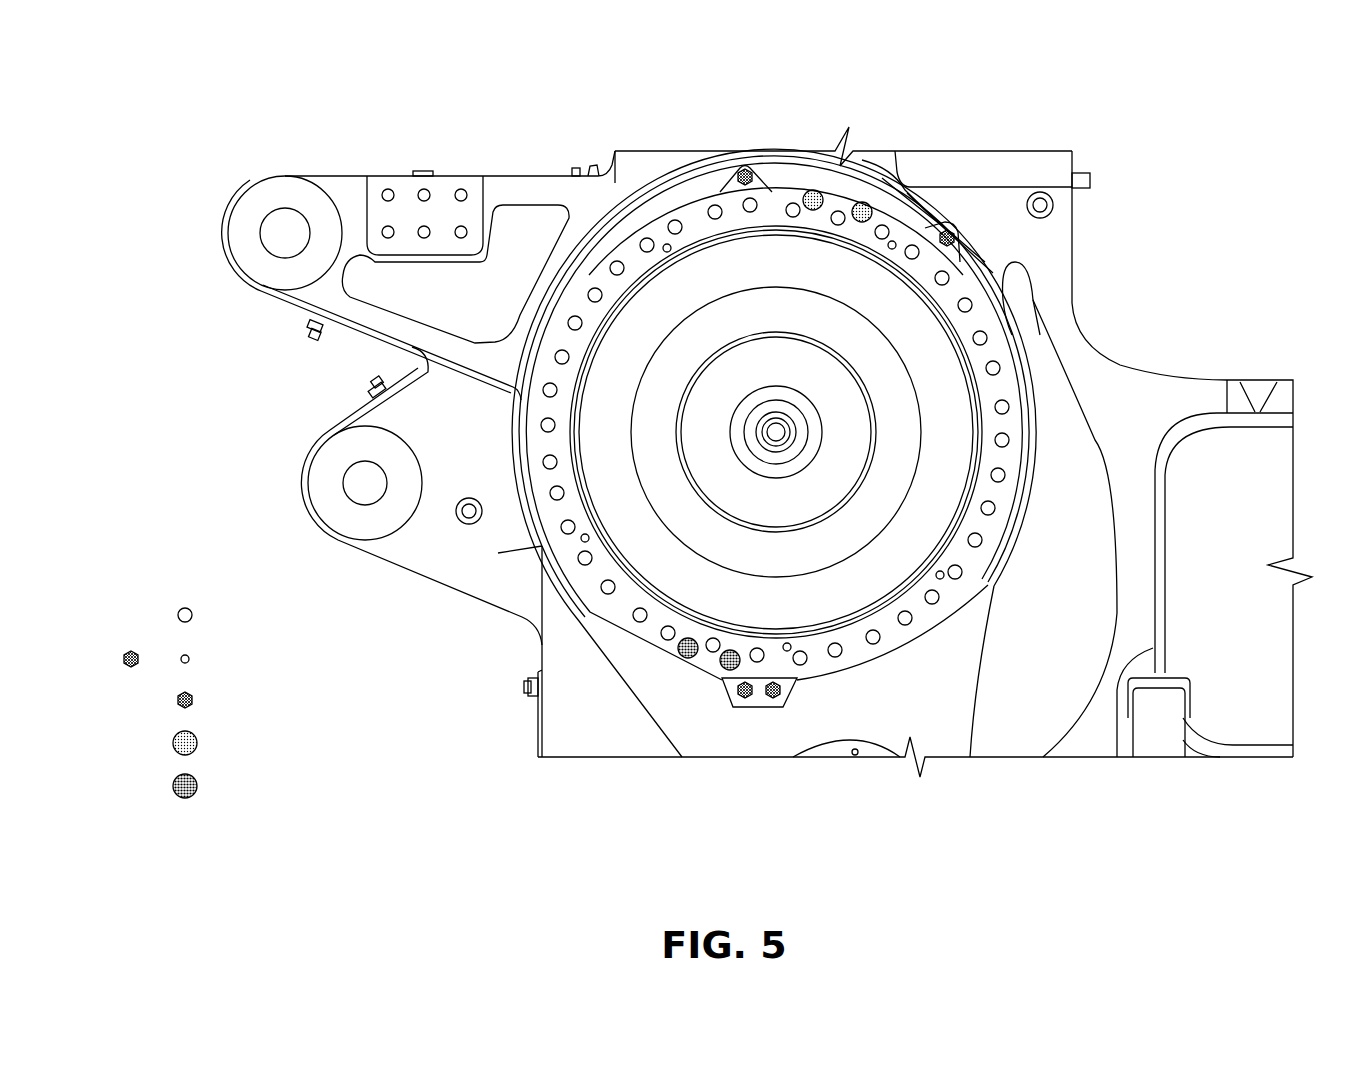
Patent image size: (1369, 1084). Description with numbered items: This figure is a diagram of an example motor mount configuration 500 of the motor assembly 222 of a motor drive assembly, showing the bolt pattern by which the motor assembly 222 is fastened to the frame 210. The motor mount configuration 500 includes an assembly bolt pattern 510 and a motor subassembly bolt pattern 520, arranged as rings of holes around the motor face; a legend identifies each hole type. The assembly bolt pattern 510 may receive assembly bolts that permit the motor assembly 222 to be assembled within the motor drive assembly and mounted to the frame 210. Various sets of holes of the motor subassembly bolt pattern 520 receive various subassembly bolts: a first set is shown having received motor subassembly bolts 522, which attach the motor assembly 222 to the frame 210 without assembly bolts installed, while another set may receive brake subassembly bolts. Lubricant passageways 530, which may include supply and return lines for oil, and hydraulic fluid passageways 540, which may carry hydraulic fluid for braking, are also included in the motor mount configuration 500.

The motor mount configuration 500 is at (208, 64).
The frame 210 is at (700, 732).
The motor assembly 222 is at (977, 318).
The assembly bolt pattern 510 is at (215, 615).
The motor subassembly bolt pattern 520 is at (188, 659).
The motor subassembly bolts 522 is at (215, 700).
The lubricant passageways 530 is at (213, 743).
The hydraulic fluid passageways 540 is at (213, 786).